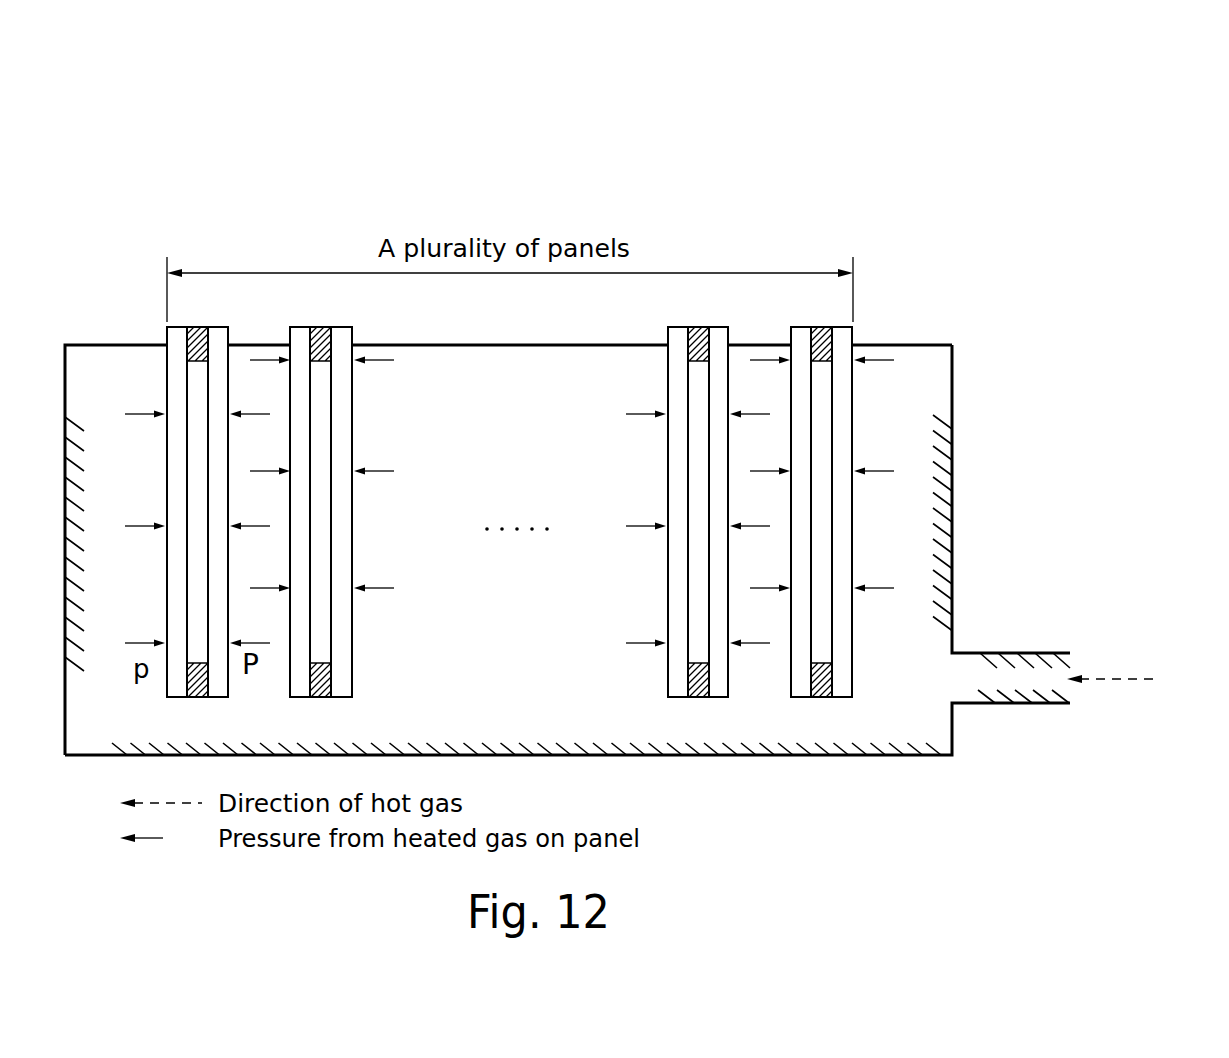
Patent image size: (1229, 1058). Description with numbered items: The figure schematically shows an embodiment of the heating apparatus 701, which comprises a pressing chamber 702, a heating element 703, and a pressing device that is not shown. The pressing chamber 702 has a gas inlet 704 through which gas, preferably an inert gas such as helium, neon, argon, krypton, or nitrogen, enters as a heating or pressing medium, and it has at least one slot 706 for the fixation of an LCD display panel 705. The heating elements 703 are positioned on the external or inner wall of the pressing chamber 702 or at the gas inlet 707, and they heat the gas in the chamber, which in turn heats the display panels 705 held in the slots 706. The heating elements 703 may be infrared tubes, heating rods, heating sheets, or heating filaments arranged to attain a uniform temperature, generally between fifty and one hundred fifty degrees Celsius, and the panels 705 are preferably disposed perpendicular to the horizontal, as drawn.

The heating apparatus 701 is at (1014, 155).
The pressing chamber 702 is at (953, 410).
The heating element 703 is at (870, 757).
The gas inlet 704 is at (1138, 682).
The display panel 705 is at (674, 320).
The slot 706 is at (860, 330).
The gas inlet 707 is at (1010, 653).